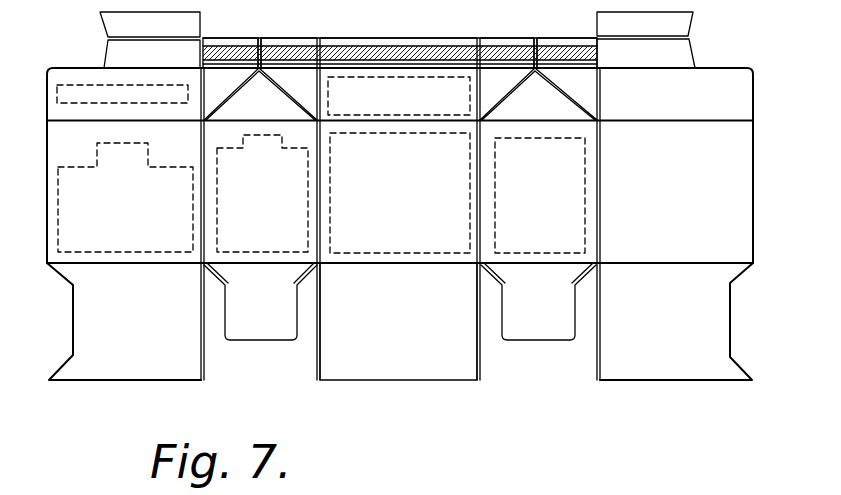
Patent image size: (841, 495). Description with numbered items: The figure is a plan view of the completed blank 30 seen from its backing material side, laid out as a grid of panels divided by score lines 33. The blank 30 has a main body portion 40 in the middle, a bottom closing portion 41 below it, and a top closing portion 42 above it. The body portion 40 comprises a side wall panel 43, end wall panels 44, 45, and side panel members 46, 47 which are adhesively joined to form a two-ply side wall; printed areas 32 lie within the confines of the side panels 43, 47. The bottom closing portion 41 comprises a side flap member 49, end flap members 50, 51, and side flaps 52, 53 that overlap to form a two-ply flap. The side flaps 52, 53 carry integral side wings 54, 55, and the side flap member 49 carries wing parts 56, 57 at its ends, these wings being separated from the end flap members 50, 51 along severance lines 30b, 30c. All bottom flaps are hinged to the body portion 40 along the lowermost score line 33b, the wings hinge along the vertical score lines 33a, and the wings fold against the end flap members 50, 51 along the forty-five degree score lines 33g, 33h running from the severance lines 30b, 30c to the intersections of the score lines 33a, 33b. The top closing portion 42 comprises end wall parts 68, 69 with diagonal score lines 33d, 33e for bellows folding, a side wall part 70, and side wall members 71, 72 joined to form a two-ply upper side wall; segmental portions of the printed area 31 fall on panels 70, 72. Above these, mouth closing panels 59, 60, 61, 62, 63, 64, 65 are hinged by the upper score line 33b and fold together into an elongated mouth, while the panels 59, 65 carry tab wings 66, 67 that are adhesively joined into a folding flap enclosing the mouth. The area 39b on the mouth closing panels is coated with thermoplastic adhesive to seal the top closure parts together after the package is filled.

The blank 30 is at (412, 366).
The severance line 30b is at (574, 326).
The severance line 30c is at (296, 326).
The rectangular area 31 is at (79, 82).
The predetermined area 32 is at (150, 160).
The score lines 33 is at (207, 141).
The vertical score line 33a is at (352, 34).
The score line 33b is at (180, 60).
The score line 33d is at (395, 34).
The score line 33e is at (446, 34).
The score line 33g is at (374, 34).
The score line 33h is at (609, 60).
The thermoplastic adhesive area 39b is at (378, 50).
The main body portion 40 is at (756, 209).
The bottom closing portion 41 is at (738, 333).
The top closing portion 42 is at (756, 101).
The side wall panel 43 is at (387, 232).
The end wall panel 44 is at (531, 232).
The end wall panel 45 is at (275, 236).
The side panel member 46 is at (680, 214).
The side panel member 47 is at (75, 149).
The side flap member 49 is at (415, 326).
The end flap member 50 is at (550, 314).
The end flap member 51 is at (266, 304).
The side flap 52 is at (673, 314).
The side flap 53 is at (135, 314).
The side wing 54 is at (590, 336).
The side wing 55 is at (216, 337).
The wing part 56 is at (494, 340).
The wing part 57 is at (310, 334).
The mouth closing panel 59 is at (655, 64).
The mouth closing panel 60 is at (580, 38).
The mouth closing panel 61 is at (520, 38).
The mouth closing panel 62 is at (428, 39).
The mouth closing panel 63 is at (300, 38).
The mouth closing panel 64 is at (234, 39).
The mouth closing panel 65 is at (160, 64).
The tab wing 66 is at (655, 32).
The tab wing 67 is at (160, 32).
The end wall part 68 is at (588, 88).
The end wall part 69 is at (310, 88).
The side wall part 70 is at (449, 114).
The side wall member 71 is at (658, 104).
The side wall member 72 is at (150, 119).